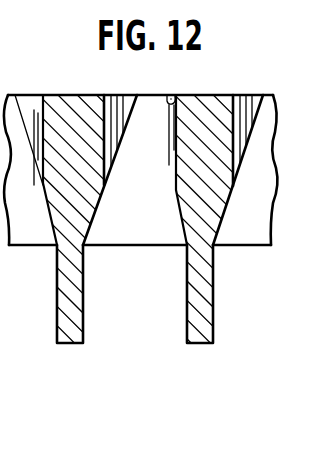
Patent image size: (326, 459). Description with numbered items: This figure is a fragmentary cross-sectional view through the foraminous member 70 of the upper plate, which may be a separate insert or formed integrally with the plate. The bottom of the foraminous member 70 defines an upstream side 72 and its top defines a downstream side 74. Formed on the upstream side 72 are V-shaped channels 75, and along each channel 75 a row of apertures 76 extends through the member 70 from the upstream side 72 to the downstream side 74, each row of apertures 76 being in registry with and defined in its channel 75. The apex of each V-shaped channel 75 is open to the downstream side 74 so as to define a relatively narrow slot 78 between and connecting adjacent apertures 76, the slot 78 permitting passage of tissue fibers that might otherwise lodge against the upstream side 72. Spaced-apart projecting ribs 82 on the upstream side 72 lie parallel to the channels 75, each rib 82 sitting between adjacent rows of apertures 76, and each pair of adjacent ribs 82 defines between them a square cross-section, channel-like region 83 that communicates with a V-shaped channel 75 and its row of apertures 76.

The foraminous member 70 is at (276, 178).
The upstream side 72 is at (247, 247).
The downstream side 74 is at (258, 96).
The V-shaped channel 75 is at (176, 209).
The aperture 76 is at (168, 93).
The slot 78 is at (140, 92).
The projecting rib 82 is at (193, 312).
The channel-like region 83 is at (170, 277).